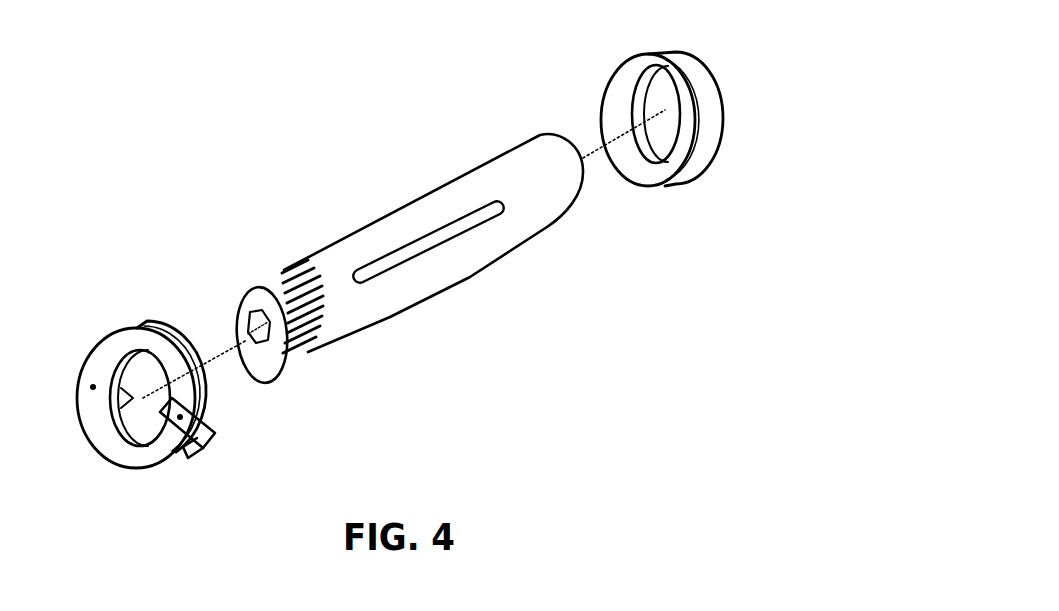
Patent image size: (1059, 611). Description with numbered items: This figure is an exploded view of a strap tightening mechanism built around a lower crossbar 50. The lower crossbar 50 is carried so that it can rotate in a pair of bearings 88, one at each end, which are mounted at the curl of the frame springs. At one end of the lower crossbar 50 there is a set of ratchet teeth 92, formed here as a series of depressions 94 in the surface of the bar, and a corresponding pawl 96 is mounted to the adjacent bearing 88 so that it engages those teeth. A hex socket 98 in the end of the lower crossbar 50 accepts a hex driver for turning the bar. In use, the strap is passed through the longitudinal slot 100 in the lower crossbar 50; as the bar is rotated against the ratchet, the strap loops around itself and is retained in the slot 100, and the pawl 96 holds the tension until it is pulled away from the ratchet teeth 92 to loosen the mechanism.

The lower crossbar 50 is at (470, 280).
The bearings 88 is at (690, 50).
The ratchet teeth 92 is at (273, 267).
The depressions 94 is at (313, 352).
The pawl 96 is at (112, 427).
The hex socket 98 is at (257, 320).
The longitudinal slot 100 is at (429, 234).